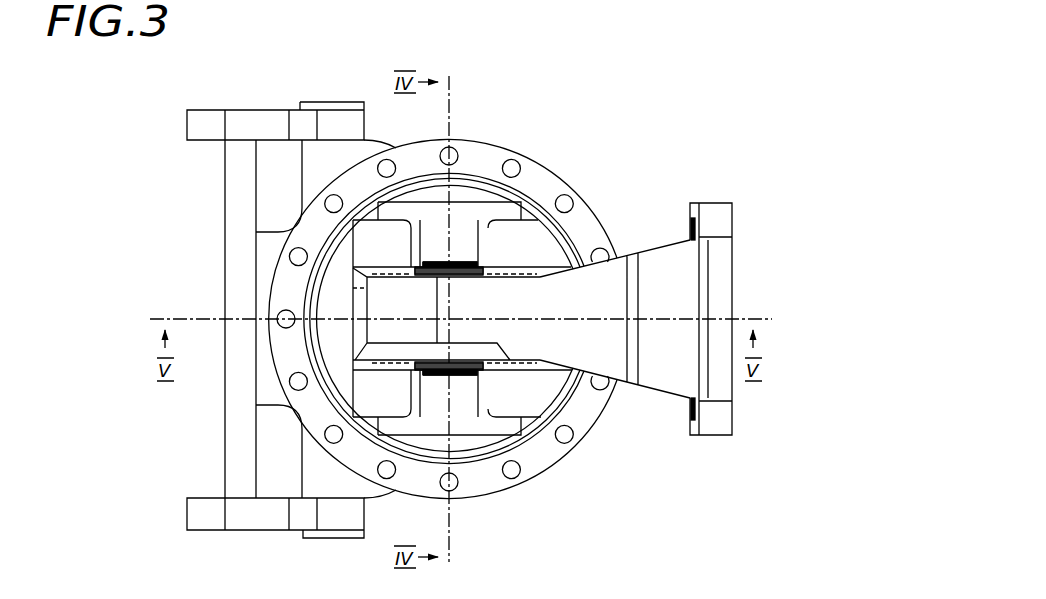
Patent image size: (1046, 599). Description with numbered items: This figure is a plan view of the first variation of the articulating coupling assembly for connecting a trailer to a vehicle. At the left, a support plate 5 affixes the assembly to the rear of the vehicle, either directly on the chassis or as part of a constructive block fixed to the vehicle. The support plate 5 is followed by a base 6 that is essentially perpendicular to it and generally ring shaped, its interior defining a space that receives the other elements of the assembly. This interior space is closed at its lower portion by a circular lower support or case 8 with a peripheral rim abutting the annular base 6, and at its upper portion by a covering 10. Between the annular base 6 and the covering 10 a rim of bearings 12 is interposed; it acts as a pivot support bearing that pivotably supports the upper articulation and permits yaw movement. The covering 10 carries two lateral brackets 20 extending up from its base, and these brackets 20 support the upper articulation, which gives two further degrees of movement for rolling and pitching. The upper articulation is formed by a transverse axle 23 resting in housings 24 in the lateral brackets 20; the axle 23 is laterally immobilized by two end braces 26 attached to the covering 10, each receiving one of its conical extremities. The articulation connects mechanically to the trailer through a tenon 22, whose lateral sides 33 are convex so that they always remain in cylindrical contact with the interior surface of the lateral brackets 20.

The support plate 5 is at (212, 176).
The base 6 is at (268, 252).
The lower support or case 8 is at (484, 283).
The covering 10 is at (335, 336).
The rim of bearings 12 is at (495, 136).
The lateral brackets 20 is at (370, 242).
The tenon 22 is at (692, 288).
The transverse axle 23 is at (452, 382).
The housings 24 is at (460, 240).
The end braces 26 is at (405, 208).
The lateral sides 33 is at (570, 262).